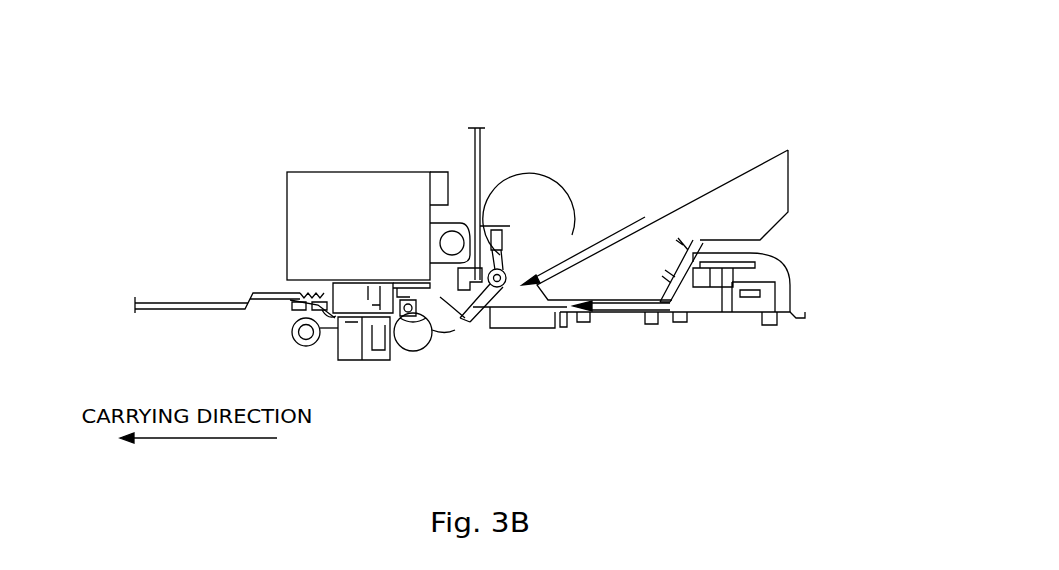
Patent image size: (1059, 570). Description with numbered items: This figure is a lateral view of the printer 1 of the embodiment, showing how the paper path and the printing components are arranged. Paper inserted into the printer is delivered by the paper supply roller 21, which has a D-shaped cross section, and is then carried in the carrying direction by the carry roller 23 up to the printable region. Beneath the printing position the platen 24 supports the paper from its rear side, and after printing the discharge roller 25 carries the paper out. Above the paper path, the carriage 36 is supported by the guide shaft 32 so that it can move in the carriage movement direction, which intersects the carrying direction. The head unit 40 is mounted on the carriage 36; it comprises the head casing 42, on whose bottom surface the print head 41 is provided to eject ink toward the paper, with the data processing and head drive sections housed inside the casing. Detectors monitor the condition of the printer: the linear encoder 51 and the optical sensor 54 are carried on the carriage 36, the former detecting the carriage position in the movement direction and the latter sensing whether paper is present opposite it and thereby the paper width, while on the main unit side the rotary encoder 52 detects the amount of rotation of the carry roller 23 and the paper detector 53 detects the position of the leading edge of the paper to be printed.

The printer 1 is at (537, 130).
The paper supply roller 21 is at (553, 190).
The carry roller 23 is at (413, 352).
The platen 24 is at (370, 362).
The discharge roller 25 is at (305, 347).
The guide shaft 32 is at (470, 195).
The carriage 36 is at (313, 172).
The head unit 40 is at (235, 215).
The print head 41 is at (340, 293).
The head casing 42 is at (350, 293).
The linear encoder 51 is at (443, 173).
The rotary encoder 52 is at (440, 352).
The paper detector 53 is at (498, 290).
The optical sensor 54 is at (407, 303).